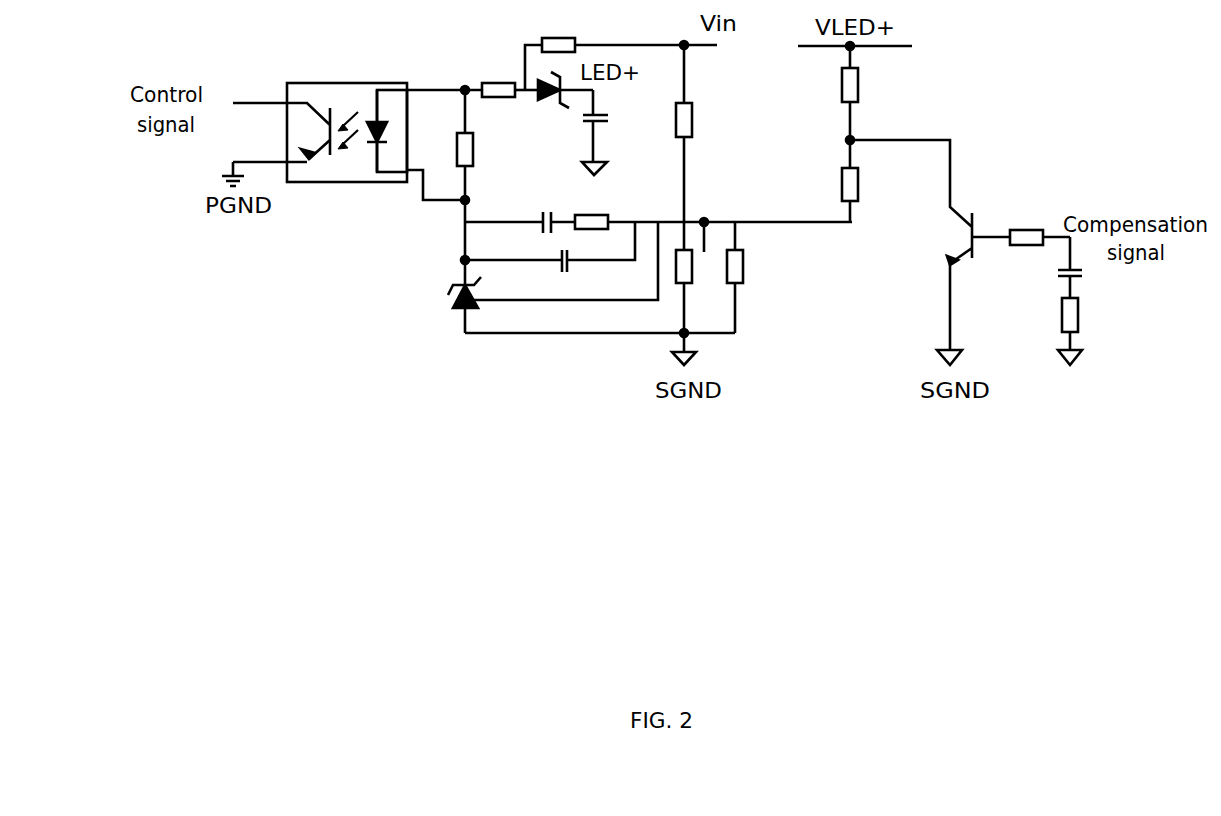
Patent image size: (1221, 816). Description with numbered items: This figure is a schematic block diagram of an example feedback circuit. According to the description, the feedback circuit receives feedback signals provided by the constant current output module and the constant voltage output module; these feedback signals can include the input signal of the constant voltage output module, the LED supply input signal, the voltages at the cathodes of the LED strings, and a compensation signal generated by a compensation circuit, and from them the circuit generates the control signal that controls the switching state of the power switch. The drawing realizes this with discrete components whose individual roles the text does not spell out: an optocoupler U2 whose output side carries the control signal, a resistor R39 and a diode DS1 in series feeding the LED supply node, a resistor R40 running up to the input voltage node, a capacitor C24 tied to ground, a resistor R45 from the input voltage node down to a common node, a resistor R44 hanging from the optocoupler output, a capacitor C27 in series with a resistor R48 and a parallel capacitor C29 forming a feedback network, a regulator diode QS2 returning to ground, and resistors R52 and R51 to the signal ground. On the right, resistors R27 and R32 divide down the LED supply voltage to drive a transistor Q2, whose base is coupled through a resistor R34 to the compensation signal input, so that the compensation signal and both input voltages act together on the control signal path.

The optocoupler U2 is at (327, 124).
The resistor R39 is at (505, 73).
The resistor R40 is at (621, 51).
The diode DS1 is at (561, 107).
The capacitor C24 is at (619, 132).
The resistor R45 is at (705, 133).
The resistor R44 is at (486, 187).
The capacitor C27 is at (520, 208).
The resistor R48 is at (712, 206).
The capacitor C29 is at (550, 261).
The voltage regulator diode QS2 is at (528, 277).
The resistor R52 is at (703, 277).
The resistor R51 is at (757, 277).
The resistor R27 is at (873, 107).
The resistor R32 is at (873, 195).
The transistor Q2 is at (911, 252).
The resistor R34 is at (1021, 222).